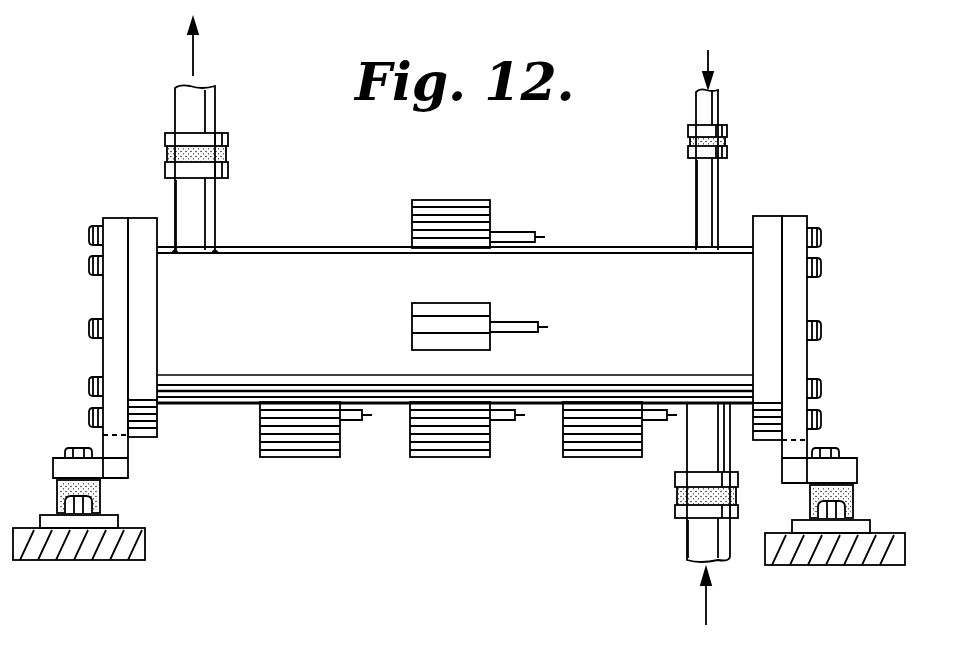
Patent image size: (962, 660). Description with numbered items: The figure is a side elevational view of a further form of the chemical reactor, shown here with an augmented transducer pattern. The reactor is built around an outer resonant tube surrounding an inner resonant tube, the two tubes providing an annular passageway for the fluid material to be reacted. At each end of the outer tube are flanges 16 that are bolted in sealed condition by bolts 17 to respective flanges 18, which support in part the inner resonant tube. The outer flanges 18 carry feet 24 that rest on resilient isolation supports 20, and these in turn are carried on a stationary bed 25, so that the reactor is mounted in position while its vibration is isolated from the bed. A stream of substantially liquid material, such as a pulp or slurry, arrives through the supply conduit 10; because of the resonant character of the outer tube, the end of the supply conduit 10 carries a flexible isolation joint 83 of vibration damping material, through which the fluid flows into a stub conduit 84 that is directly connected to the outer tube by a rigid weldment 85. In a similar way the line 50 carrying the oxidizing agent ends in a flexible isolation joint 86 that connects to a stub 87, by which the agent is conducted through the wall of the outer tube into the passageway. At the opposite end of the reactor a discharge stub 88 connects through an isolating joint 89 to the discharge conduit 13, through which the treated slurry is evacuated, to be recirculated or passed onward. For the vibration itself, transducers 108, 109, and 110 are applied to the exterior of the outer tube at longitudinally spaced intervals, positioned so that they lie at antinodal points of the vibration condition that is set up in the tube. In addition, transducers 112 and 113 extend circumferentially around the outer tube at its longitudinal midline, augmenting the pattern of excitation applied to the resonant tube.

The supply conduit 10 is at (190, 108).
The discharge conduit 13 is at (697, 548).
The flanges 16 is at (142, 313).
The bolts 17 is at (89, 264).
The flanges 18 is at (112, 301).
The resilient isolation supports 20 is at (100, 494).
The feet 24 is at (60, 467).
The stationary bed 25 is at (82, 548).
The line 50 is at (702, 105).
The flexible isolation joint 83 is at (228, 150).
The stub conduit 84 is at (200, 196).
The rigid weldment 85 is at (220, 250).
The flexible isolation joint 86 is at (728, 137).
The stub 87 is at (706, 192).
The discharge stub 88 is at (697, 412).
The isolating joint 89 is at (692, 497).
The transducer 108 is at (296, 456).
The transducer 109 is at (442, 446).
The transducer 110 is at (588, 450).
The transducer 112 is at (438, 210).
The transducer 113 is at (455, 306).